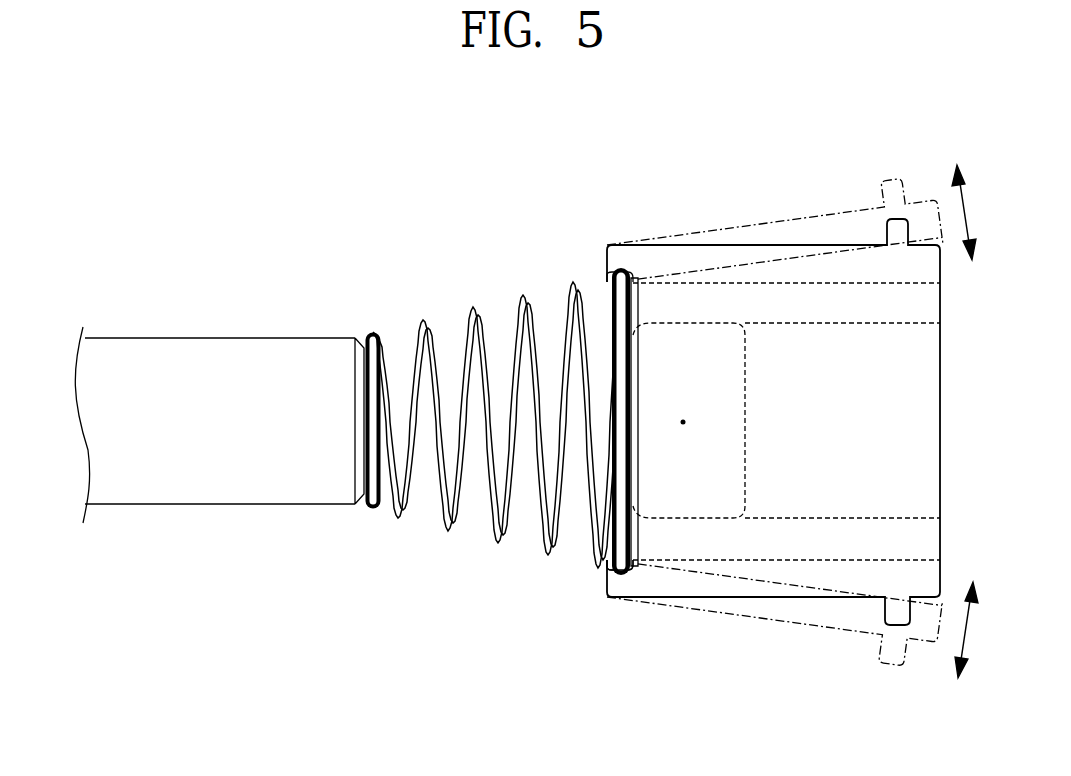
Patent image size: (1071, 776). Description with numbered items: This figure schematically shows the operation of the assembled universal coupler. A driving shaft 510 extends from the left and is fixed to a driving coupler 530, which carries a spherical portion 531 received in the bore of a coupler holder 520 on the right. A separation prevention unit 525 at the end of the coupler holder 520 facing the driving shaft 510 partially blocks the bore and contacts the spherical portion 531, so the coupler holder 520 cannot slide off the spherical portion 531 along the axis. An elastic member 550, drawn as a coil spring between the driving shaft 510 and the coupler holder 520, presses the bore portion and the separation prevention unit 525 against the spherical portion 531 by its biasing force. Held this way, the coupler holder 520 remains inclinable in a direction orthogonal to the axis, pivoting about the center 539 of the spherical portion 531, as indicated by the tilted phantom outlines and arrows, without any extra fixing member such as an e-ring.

The driving shaft 510 is at (231, 337).
The coupler holder 520 is at (803, 247).
The separation prevention unit 525 is at (636, 513).
The driving coupler 530 is at (718, 343).
The spherical portion 531 is at (656, 323).
The center of the spherical portion 539 is at (683, 422).
The elastic member 550 is at (471, 308).